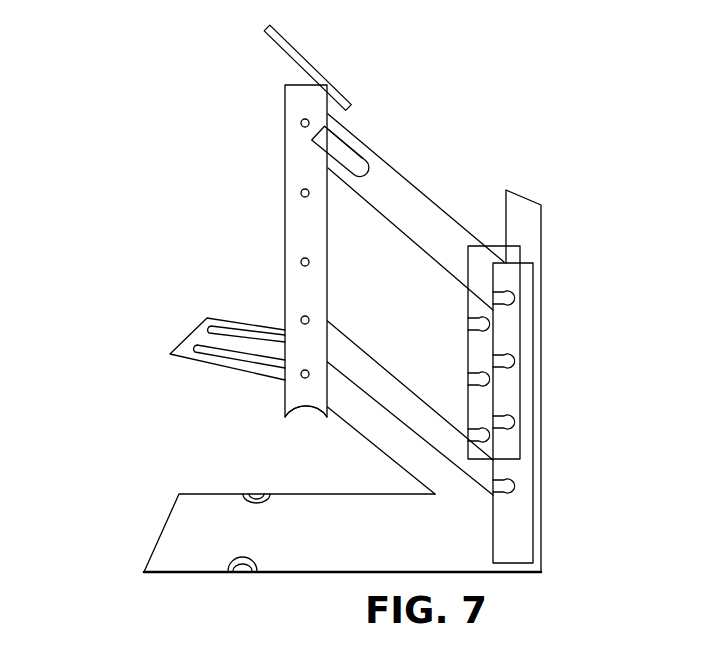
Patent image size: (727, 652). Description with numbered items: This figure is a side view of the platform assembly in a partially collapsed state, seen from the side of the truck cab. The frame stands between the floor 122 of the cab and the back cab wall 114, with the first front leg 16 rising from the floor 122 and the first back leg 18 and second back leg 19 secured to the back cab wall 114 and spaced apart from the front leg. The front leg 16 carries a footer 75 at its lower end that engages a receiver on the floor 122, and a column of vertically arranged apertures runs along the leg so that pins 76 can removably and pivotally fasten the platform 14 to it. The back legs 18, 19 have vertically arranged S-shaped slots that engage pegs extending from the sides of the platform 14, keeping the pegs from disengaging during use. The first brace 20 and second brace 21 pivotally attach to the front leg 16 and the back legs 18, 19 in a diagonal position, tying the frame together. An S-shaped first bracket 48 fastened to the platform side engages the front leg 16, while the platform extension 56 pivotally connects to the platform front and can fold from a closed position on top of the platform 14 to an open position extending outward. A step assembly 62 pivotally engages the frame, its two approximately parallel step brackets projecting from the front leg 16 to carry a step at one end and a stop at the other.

The platform 14 is at (413, 210).
The first front leg 16 is at (293, 176).
The first back leg 18 is at (525, 397).
The second back leg 19 is at (477, 343).
The first brace 20 is at (381, 426).
The second brace 21 is at (345, 352).
The first bracket 48 is at (350, 160).
The platform extension 56 is at (300, 62).
The step assembly 62 is at (197, 337).
The footer 75 is at (287, 418).
The pins 76 is at (238, 570).
The back cab wall 114 is at (525, 232).
The floor 122 is at (177, 559).